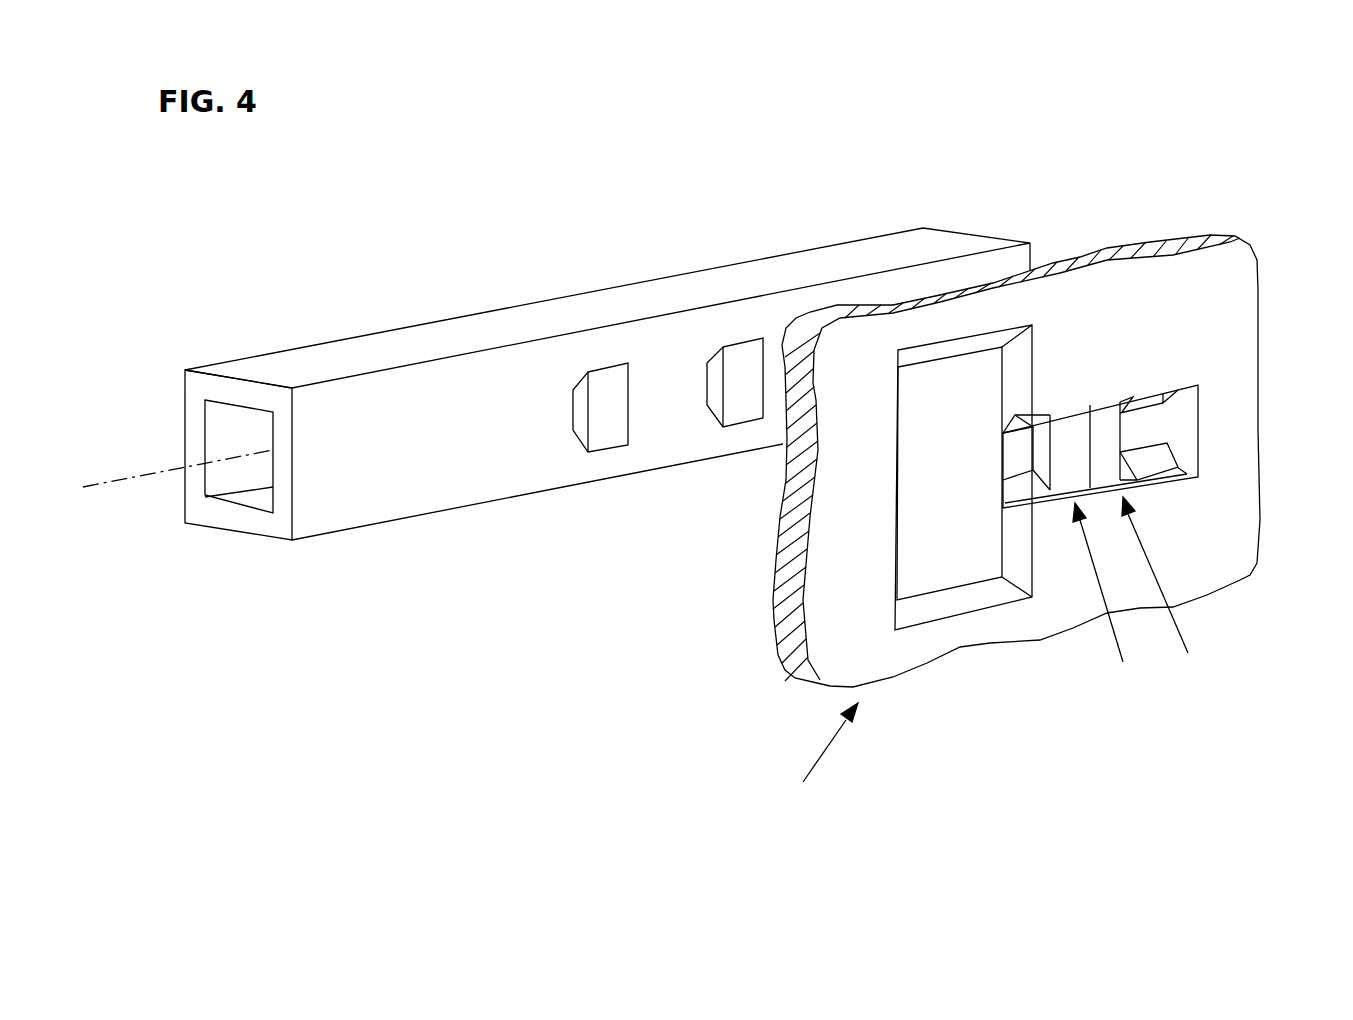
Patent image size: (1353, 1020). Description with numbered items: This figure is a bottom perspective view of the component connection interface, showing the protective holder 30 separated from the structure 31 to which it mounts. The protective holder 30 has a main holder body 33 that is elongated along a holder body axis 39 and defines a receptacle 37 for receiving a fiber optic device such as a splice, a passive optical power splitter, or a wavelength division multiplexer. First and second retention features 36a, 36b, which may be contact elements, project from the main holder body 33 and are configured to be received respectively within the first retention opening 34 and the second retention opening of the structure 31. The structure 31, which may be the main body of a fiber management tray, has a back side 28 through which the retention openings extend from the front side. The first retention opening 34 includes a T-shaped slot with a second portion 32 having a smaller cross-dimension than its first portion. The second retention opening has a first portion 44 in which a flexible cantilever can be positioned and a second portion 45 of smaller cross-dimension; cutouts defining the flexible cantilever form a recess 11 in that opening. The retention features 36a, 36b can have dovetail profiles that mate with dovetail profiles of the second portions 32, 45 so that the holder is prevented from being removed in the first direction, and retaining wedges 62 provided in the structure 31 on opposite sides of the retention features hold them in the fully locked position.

The protective holder 30 is at (862, 243).
The main holder body 33 is at (432, 487).
The receptacle 37 is at (235, 482).
The holder body axis 39 is at (118, 478).
The first retention feature 36a is at (733, 415).
The second retention feature 36b is at (603, 442).
The back side 28 is at (1240, 320).
The recess 11 is at (998, 347).
The second portion 32 is at (1148, 433).
The first portion 44 is at (1015, 463).
The retaining wedges 62 is at (1150, 400).
The second portion 45 is at (1109, 596).
The first retention opening 34 is at (1167, 587).
The structure 31 is at (819, 757).